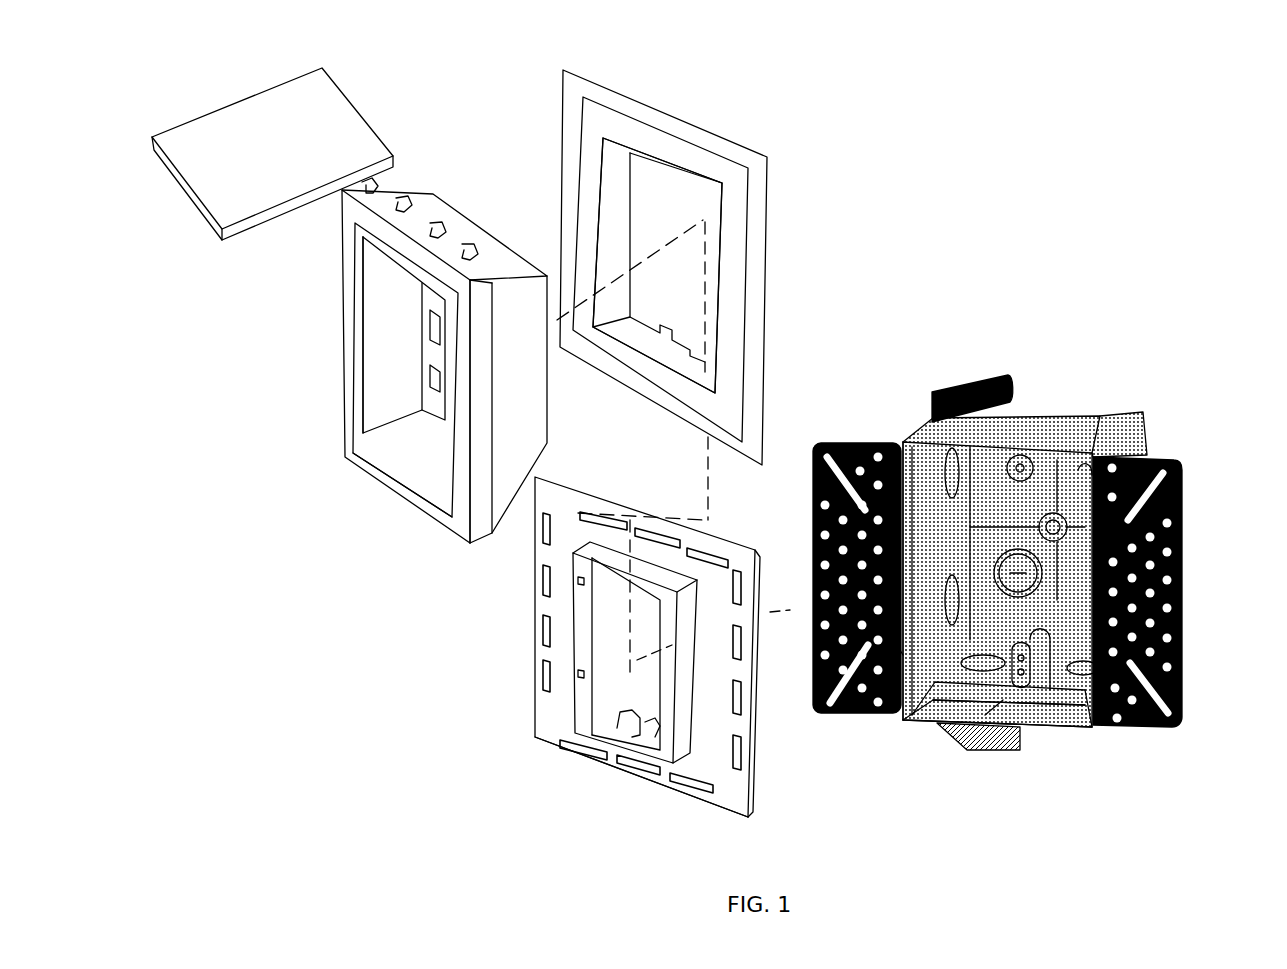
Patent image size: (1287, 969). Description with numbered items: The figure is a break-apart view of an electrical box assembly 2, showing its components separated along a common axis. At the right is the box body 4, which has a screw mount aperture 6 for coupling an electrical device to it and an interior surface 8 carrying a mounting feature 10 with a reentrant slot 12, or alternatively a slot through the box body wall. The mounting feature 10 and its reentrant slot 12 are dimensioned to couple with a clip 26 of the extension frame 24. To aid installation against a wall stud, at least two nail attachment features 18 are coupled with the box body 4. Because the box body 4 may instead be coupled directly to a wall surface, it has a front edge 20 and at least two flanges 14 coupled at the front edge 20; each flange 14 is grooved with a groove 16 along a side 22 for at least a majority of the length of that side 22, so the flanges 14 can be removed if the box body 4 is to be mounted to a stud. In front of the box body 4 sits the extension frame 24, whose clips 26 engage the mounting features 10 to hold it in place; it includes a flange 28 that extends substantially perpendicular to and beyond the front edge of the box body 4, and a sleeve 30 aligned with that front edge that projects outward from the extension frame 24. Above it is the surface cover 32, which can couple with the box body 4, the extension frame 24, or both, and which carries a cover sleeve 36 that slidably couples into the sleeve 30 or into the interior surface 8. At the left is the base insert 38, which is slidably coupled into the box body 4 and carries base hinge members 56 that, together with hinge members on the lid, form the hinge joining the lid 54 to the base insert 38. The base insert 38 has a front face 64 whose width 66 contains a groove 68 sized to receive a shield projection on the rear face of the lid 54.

The electrical box assembly 2 is at (862, 378).
The box body 4 is at (1147, 440).
The screw mount aperture 6 is at (1022, 460).
The interior surface 8 is at (1052, 712).
The mounting feature 10 is at (993, 712).
The reentrant slot 12 is at (1003, 700).
The flanges 14 is at (822, 710).
The groove 16 is at (900, 444).
The nail attachment features 18 is at (1010, 384).
The front edge 20 is at (920, 723).
The side 22 is at (900, 650).
The extension frame 24 is at (683, 795).
The clip 26 is at (617, 728).
The flange 28 is at (552, 747).
The sleeve 30 is at (572, 695).
The surface cover 32 is at (767, 230).
The cover sleeve 36 is at (620, 193).
The base insert 38 is at (467, 217).
The lid 54 is at (297, 76).
The base hinge members 56 is at (400, 193).
The front face 64 is at (398, 493).
The width 66 is at (460, 523).
The groove 68 is at (348, 421).